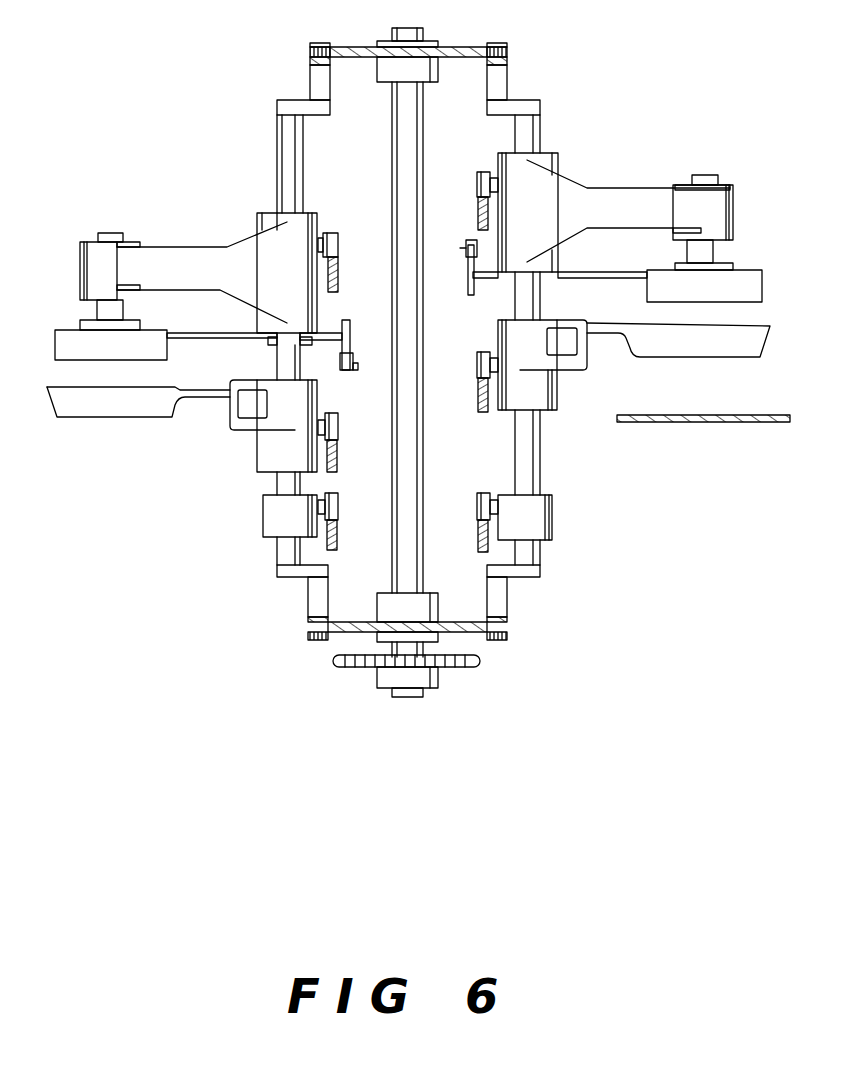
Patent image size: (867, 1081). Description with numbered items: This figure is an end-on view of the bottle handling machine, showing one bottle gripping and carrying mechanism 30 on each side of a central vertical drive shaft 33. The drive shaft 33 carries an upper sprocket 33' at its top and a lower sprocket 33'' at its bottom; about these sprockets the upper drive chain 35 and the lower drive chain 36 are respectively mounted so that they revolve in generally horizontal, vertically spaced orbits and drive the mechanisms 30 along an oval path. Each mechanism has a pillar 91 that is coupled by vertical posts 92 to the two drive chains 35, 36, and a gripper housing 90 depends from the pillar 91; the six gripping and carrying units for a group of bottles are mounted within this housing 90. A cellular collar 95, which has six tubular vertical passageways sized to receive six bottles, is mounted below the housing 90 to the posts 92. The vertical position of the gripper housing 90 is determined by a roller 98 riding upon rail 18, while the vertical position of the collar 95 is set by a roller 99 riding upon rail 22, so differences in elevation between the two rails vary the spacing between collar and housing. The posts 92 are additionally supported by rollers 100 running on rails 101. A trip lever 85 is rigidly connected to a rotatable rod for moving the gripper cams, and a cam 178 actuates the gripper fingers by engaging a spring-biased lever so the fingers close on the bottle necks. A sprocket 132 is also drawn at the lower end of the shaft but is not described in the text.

The rail 18 is at (338, 268).
The rail 22 is at (338, 455).
The bottle gripping and carrying mechanism 30 is at (256, 224).
The vertical drive shaft 33 is at (395, 362).
The upper sprocket 33' is at (422, 29).
The lower sprocket 33'' is at (434, 648).
The upper drive chain 35 is at (318, 46).
The lower drive chain 36 is at (310, 634).
The trip lever 85 is at (348, 320).
The gripper housing 90 is at (60, 337).
The pillar 91 is at (80, 265).
The vertical post 92 is at (282, 157).
The cellular collar 95 is at (115, 408).
The roller 98 is at (335, 235).
The roller 99 is at (337, 415).
The roller 100 is at (337, 497).
The rail 101 is at (338, 530).
The sprocket 132 is at (375, 672).
The cam 178 is at (353, 360).